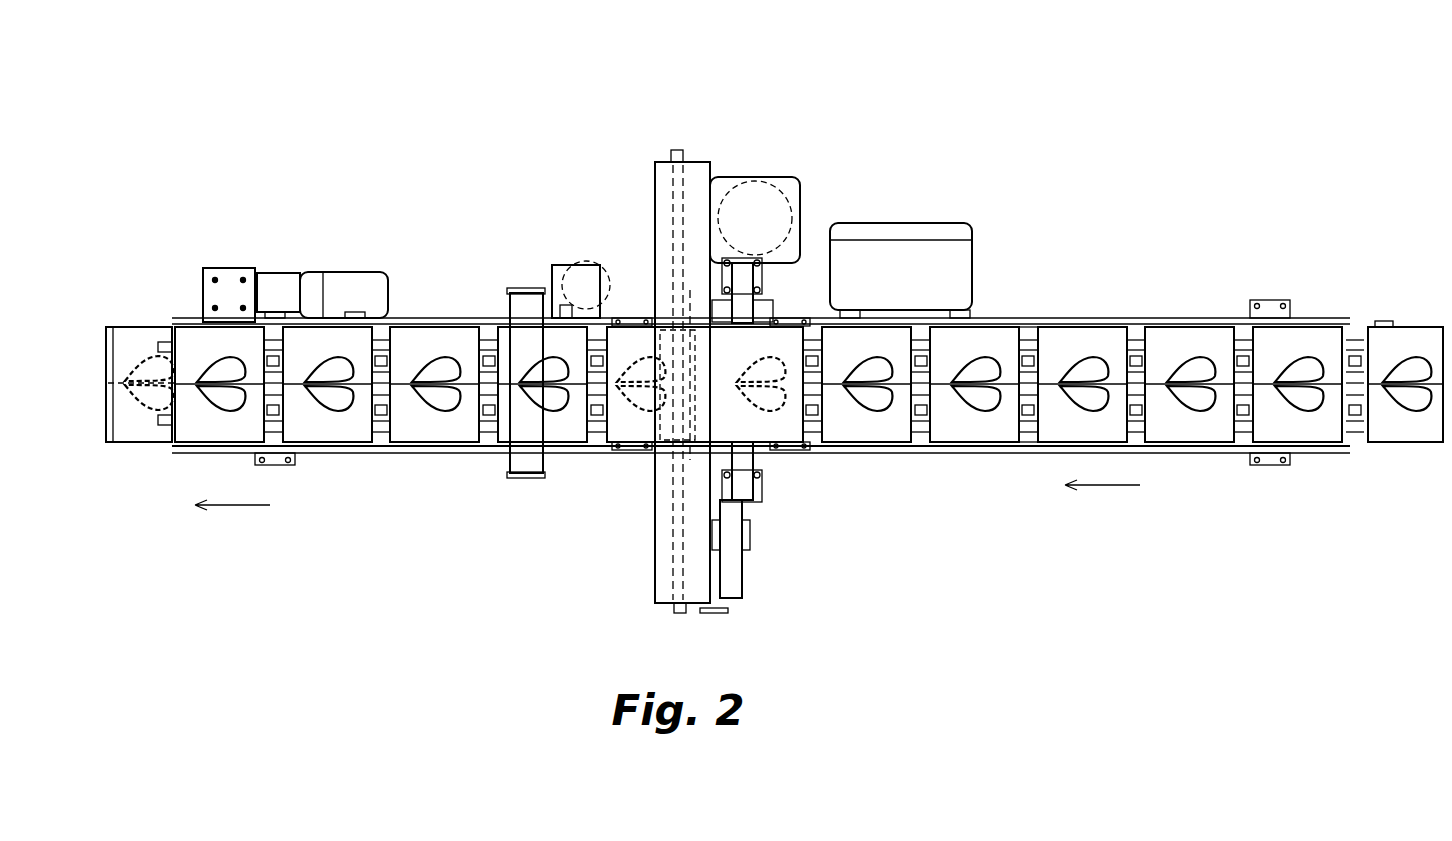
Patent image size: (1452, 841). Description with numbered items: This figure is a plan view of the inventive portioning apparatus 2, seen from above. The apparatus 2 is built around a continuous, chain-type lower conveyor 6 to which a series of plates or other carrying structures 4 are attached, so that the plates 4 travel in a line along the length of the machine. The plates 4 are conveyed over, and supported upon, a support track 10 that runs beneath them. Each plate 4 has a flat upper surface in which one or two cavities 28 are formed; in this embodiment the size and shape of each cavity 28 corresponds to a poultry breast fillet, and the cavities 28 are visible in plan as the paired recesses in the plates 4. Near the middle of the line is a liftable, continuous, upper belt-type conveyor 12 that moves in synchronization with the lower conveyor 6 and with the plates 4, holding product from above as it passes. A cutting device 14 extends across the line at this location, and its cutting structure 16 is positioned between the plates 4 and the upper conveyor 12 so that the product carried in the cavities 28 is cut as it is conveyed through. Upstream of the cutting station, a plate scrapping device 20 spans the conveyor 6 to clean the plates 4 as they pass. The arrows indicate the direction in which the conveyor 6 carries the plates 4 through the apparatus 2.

The portioning apparatus 2 is at (855, 131).
The carrying plate 4 is at (195, 432).
The continuous conveyor 6 is at (1032, 435).
The support track 10 is at (1030, 345).
The upper belt-type conveyor 12 is at (627, 425).
The cutting device 14 is at (665, 555).
The cutting structure 16 is at (655, 300).
The plate scrapping device 20 is at (528, 478).
The cavity 28 is at (215, 363).